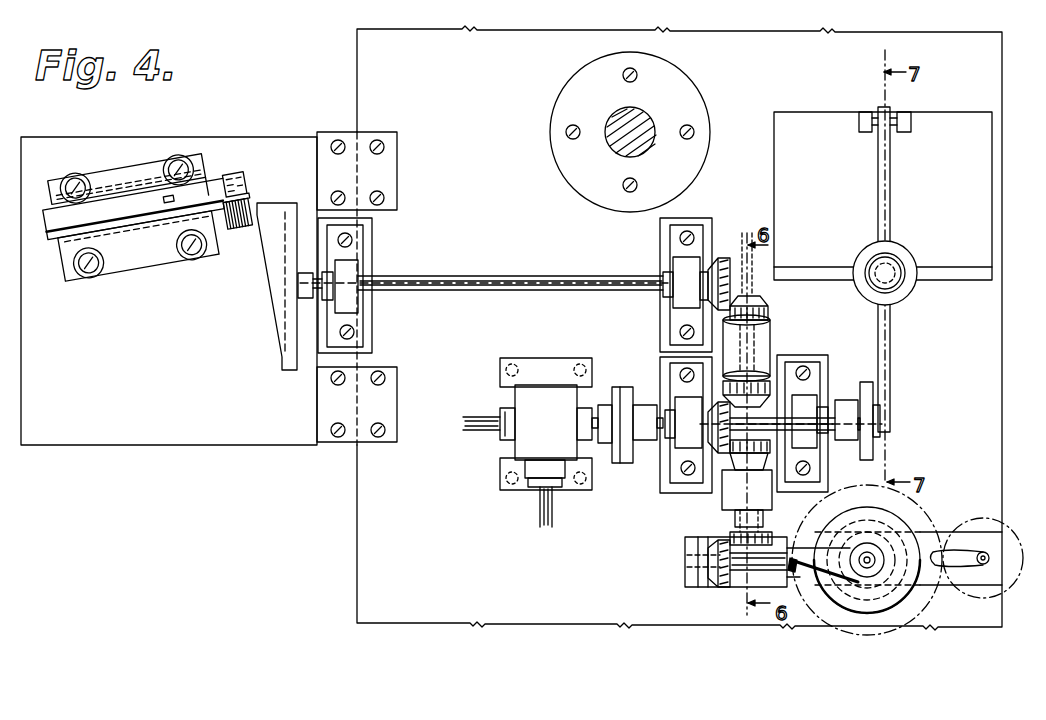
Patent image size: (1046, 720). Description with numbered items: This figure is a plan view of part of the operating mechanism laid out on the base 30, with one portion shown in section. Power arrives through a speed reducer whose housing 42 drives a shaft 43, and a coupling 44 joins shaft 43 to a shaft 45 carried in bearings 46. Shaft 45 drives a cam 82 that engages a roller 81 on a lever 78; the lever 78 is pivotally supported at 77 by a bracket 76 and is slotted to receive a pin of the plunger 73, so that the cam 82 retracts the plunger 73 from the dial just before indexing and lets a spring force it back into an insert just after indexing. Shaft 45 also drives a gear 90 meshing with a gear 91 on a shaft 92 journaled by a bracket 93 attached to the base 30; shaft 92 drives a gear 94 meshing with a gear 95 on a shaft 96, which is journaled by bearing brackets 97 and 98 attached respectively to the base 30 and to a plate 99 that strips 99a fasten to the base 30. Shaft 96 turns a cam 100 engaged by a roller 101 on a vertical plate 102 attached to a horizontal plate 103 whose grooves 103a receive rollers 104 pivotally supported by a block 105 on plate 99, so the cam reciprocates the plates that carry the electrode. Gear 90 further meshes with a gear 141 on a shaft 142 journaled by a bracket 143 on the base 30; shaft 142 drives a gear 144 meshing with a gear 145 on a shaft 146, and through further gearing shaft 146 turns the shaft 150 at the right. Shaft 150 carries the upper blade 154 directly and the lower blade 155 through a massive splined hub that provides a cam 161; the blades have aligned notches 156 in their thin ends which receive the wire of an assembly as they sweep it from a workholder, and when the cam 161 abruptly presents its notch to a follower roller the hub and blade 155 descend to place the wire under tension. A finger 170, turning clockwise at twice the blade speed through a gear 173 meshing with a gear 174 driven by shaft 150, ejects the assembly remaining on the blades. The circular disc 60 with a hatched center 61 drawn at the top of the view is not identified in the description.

The base 30 is at (357, 58).
The speed reducer housing 42 is at (525, 397).
The shaft 43 is at (487, 430).
The coupling 44 is at (617, 394).
The shaft 45 is at (768, 423).
The bearings 46 is at (690, 445).
The disc 60 is at (577, 83).
The hub 61 is at (645, 126).
The plunger 73 is at (901, 256).
The bracket 76 is at (788, 162).
The pivot 77 is at (867, 112).
The lever 78 is at (891, 348).
The roller 81 is at (880, 412).
The cam 82 is at (871, 446).
The gear 90 is at (720, 432).
The gear 91 is at (761, 352).
The shaft 92 is at (760, 313).
The bracket 93 is at (772, 336).
The gear 94 is at (757, 307).
The gear 95 is at (723, 256).
The shaft 96 is at (572, 278).
The bearing bracket 97 is at (678, 262).
The bearing bracket 98 is at (350, 270).
The plate 99 is at (295, 140).
The strips 99a is at (350, 132).
The cam 100 is at (275, 302).
The roller 101 is at (237, 228).
The vertical plate 102 is at (195, 196).
The horizontal plate 103 is at (115, 205).
The grooves 103a is at (163, 240).
The rollers 104 is at (73, 176).
The block 105 is at (134, 264).
The gear 141 is at (829, 460).
The shaft 142 is at (733, 518).
The bracket 143 is at (760, 502).
The gear 144 is at (763, 530).
The gear 145 is at (710, 551).
The shaft 146 is at (737, 576).
The shaft 150 is at (868, 557).
The upper blade 154 is at (837, 543).
The lower blade 155 is at (857, 578).
The notches 156 is at (788, 563).
The cam 161 is at (908, 593).
The finger 170 is at (966, 560).
The gear 173 is at (988, 598).
The gear 174 is at (891, 629).